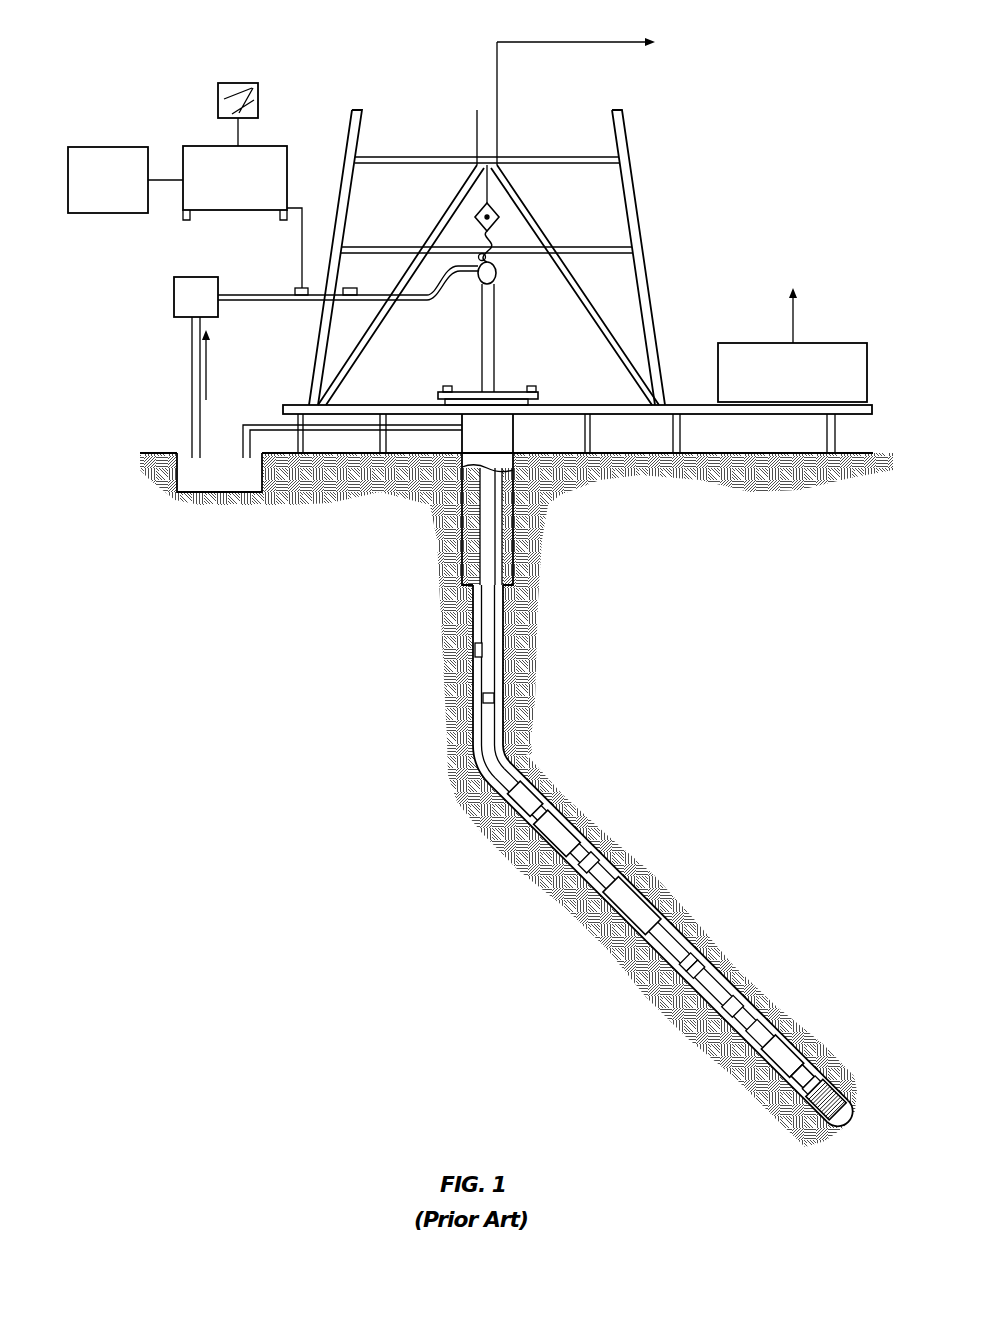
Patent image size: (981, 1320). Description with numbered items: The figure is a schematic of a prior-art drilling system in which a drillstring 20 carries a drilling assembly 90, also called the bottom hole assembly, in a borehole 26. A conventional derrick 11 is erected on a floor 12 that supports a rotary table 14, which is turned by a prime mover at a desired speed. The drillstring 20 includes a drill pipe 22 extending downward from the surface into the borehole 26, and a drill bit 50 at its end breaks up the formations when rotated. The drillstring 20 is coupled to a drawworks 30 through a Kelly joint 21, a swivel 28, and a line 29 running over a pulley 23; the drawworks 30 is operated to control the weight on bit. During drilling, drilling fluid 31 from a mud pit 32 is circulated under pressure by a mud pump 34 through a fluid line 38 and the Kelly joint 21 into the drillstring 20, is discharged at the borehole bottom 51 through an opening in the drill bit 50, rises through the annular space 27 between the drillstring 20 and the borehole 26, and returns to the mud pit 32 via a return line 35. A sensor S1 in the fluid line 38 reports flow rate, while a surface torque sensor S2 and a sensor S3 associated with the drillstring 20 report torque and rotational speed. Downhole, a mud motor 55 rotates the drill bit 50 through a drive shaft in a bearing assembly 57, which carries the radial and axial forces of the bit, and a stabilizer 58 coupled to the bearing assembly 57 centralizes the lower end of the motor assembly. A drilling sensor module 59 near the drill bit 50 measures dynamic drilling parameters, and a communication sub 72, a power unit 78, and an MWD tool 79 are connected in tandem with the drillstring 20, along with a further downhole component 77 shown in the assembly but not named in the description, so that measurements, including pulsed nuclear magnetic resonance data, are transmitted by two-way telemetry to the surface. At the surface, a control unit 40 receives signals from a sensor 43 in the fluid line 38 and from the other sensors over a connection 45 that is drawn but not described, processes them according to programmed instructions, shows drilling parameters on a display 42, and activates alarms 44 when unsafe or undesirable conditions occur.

The derrick 11 is at (641, 222).
The floor 12 is at (672, 405).
The rotary table 14 is at (507, 390).
The drillstring 20 is at (500, 656).
The Kelly joint 21 is at (496, 306).
The drill pipe 22 is at (468, 628).
The pulley 23 is at (494, 232).
The borehole 26 is at (511, 760).
The annular space 27 is at (523, 790).
The swivel 28 is at (484, 291).
The line 29 is at (500, 140).
The drawworks 30 is at (857, 343).
The drilling fluid 31 is at (203, 475).
The mud pit 32 is at (245, 492).
The mud pump 34 is at (174, 296).
The return line 35 is at (437, 432).
The fluid line 38 is at (278, 300).
The surface control unit 40 is at (216, 146).
The display/monitor 42 is at (223, 83).
The sensor 43 is at (298, 288).
The alarms 44 is at (128, 147).
The signal line 45 is at (292, 208).
The drill bit 50 is at (843, 1098).
The borehole bottom 51 is at (815, 1138).
The downhole motor 55 is at (686, 943).
The bearing assembly 57 is at (790, 1048).
The stabilizer 58 is at (810, 1066).
The drilling sensor module 59 is at (789, 1088).
The communication sub 72 is at (481, 733).
The downhole tool 77 is at (540, 840).
The power unit 78 is at (487, 775).
The MWD tool 79 is at (498, 797).
The drilling assembly 90 is at (768, 788).
The sensor S1 is at (350, 288).
The surface torque sensor S2 is at (532, 388).
The sensor S3 is at (447, 386).